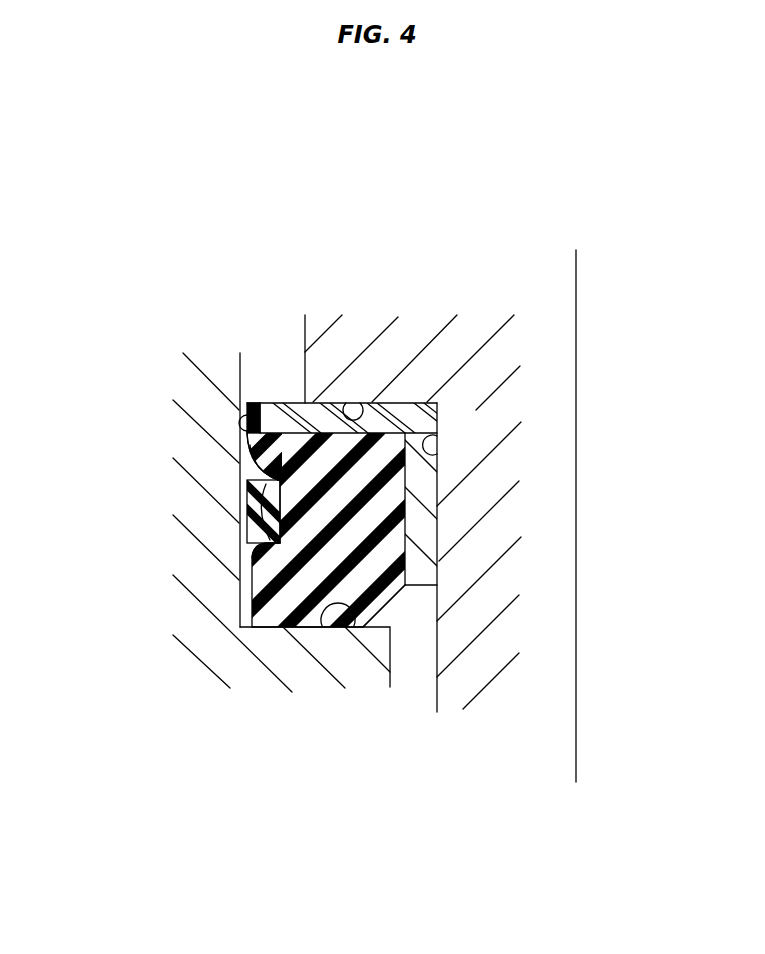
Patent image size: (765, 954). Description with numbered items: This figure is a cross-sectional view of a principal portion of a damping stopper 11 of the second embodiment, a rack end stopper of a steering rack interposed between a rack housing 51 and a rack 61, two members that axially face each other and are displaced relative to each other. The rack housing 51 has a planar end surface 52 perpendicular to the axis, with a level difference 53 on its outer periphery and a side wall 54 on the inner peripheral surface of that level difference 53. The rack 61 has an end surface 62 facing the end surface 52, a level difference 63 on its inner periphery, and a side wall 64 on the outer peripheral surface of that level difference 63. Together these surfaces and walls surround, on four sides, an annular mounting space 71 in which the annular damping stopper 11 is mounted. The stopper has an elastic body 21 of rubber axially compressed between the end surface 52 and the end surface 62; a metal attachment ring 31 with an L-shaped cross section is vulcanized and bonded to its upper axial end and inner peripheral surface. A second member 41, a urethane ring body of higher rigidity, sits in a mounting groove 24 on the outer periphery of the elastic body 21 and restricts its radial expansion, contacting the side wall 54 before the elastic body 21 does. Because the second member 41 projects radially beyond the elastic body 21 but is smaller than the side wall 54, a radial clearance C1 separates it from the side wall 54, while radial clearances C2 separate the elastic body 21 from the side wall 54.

The damping stopper 11 is at (288, 398).
The elastic body 21 is at (335, 498).
The mounting groove 24 is at (255, 541).
The attachment ring 31 is at (436, 417).
The second member 41 is at (252, 481).
The rack housing 51 is at (215, 645).
The end surface 52 is at (357, 625).
The level difference 53 is at (223, 374).
The side wall 54 is at (242, 416).
The rack 61 is at (496, 345).
The end surface 62 is at (366, 402).
The level difference 63 is at (488, 470).
The side wall 64 is at (436, 457).
The mounting space 71 is at (400, 603).
The radial clearance C1 is at (250, 519).
The radial clearance C2 is at (245, 452).